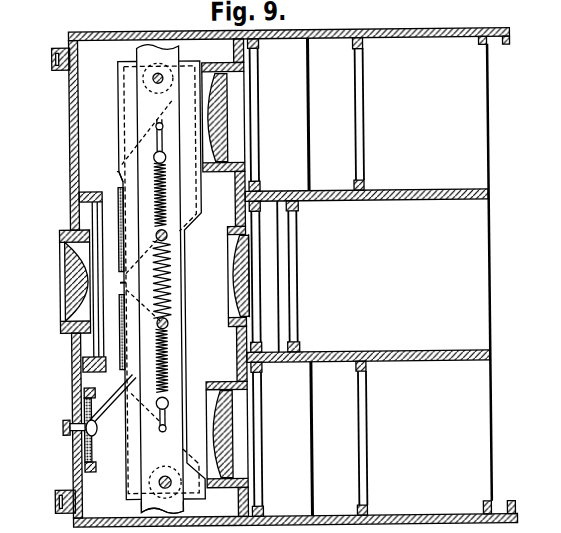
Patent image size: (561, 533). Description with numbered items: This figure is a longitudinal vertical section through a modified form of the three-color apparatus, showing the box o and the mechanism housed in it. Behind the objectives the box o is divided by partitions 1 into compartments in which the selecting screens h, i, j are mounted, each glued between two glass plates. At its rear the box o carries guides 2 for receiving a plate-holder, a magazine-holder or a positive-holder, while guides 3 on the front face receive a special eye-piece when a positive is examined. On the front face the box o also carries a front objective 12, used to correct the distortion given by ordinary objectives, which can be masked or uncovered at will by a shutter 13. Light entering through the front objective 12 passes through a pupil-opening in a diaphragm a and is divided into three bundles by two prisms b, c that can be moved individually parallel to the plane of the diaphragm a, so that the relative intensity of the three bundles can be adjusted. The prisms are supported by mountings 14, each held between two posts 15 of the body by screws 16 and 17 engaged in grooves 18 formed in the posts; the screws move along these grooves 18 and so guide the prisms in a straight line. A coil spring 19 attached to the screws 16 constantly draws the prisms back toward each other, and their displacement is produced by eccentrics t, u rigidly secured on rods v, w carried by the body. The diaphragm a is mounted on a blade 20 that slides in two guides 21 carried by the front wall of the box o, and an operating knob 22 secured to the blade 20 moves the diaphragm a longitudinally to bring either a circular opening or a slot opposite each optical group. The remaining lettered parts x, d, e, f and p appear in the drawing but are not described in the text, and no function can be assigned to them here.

The partition 1 is at (414, 202).
The guide 2 is at (515, 42).
The guide 3 is at (60, 280).
The front objective 12 is at (66, 281).
The shutter 13 is at (101, 221).
The mounting 14 is at (122, 104).
The post 15 is at (162, 280).
The screw 16 is at (168, 162).
The screw 17 is at (167, 234).
The groove 18 is at (158, 125).
The coil spring 19 is at (170, 284).
The blade 20 is at (72, 404).
The guide 21 is at (81, 389).
The operating knob 22 is at (58, 427).
The box o is at (325, 29).
The eccentric t is at (149, 84).
The eccentric u is at (148, 481).
The rod v is at (164, 77).
The rod w is at (168, 482).
The diaphragm a is at (121, 198).
The prism b is at (125, 172).
The contact point x is at (123, 281).
The prism c is at (113, 399).
The lens d is at (242, 265).
The lens e is at (220, 122).
The lens f is at (230, 438).
The selecting screen i is at (312, 127).
The selecting screen h is at (280, 283).
The selecting screen j is at (311, 457).
The partition p is at (233, 278).